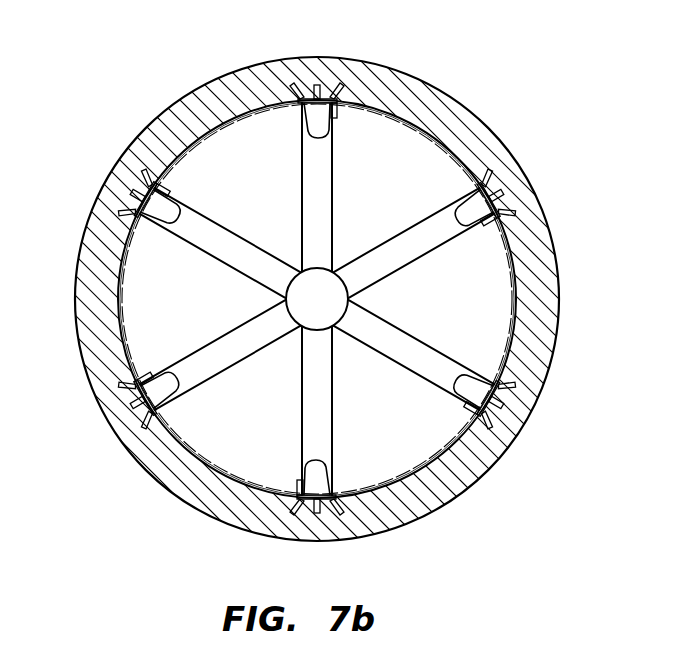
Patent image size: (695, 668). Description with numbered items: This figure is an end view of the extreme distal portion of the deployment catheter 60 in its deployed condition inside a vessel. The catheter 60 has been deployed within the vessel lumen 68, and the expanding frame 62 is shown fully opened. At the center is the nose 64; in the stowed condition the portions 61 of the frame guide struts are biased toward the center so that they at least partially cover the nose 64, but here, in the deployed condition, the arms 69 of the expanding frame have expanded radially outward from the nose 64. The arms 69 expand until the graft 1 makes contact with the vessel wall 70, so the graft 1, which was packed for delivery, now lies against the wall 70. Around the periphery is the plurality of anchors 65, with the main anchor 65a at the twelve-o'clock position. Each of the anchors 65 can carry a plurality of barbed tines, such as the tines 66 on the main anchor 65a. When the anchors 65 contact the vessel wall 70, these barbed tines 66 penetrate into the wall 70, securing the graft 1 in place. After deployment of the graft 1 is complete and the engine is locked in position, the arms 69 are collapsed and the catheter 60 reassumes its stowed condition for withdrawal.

The graft 1 is at (118, 291).
The catheter 60 is at (538, 122).
The portions of the frame guide struts 61 is at (321, 121).
The expanding frame 62 is at (326, 182).
The nose 64 is at (324, 319).
The anchors 65 is at (500, 190).
The main anchor 65a is at (340, 90).
The barbed tines 66 is at (297, 93).
The vessel lumen 68 is at (205, 158).
The arms of the expanding frame 69 is at (425, 357).
The vessel wall 70 is at (556, 290).